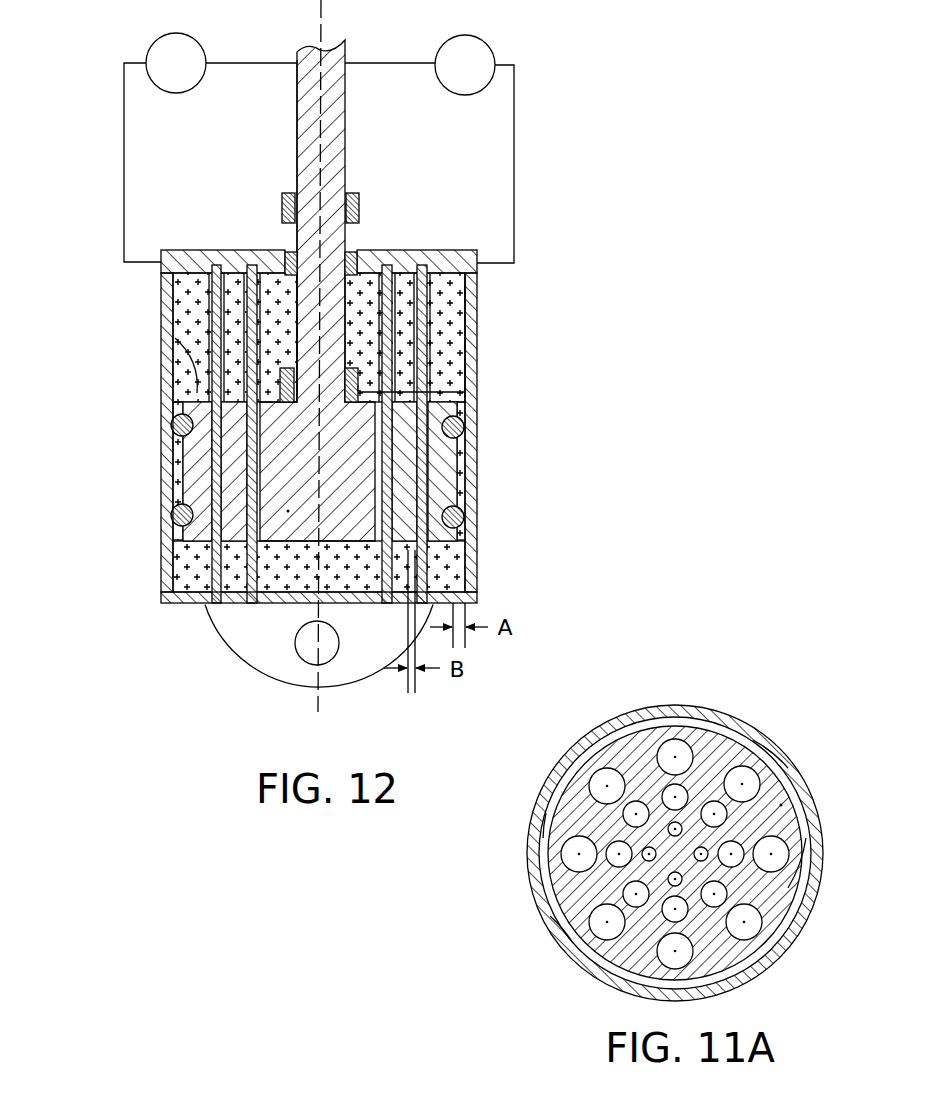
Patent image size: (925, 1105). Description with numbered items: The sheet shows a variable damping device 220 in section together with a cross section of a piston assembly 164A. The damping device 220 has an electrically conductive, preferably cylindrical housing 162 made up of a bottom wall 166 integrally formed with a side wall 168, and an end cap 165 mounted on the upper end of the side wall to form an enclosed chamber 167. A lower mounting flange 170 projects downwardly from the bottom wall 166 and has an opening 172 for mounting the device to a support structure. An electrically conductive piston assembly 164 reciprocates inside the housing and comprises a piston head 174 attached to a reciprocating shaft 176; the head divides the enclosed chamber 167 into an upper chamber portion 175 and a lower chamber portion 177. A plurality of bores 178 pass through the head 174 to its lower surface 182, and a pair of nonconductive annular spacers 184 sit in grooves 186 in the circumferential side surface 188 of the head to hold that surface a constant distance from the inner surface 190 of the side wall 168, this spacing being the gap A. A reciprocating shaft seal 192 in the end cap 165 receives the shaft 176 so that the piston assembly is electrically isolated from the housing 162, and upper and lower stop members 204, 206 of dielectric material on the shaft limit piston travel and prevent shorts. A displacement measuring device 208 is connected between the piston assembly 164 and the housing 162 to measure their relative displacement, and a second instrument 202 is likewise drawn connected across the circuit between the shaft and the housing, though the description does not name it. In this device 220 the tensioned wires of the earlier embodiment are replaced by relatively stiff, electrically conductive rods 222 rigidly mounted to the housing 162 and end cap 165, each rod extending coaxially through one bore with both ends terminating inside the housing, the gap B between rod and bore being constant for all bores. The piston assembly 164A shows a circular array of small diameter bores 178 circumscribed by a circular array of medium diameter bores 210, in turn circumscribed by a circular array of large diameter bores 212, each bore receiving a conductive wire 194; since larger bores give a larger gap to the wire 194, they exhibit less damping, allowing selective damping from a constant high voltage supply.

In FIG. 12, the housing 162 is at (482, 375).
In FIG. 11A, the housing 162 is at (541, 769).
In FIG. 12, the piston assembly 164 is at (348, 96).
In FIG. 11A, the piston assembly 164A is at (809, 840).
In FIG. 12, the end cap 165 is at (173, 263).
In FIG. 12, the bottom wall 166 is at (200, 604).
In FIG. 11A, the bottom wall 166 is at (597, 732).
In FIG. 12, the enclosed chamber 167 is at (218, 312).
In FIG. 12, the side wall 168 is at (168, 572).
In FIG. 12, the lower mounting flange 170 is at (283, 680).
In FIG. 12, the opening 172 is at (327, 643).
In FIG. 12, the piston head 174 is at (288, 512).
In FIG. 11A, the piston head 174 is at (781, 805).
In FIG. 12, the upper chamber portion 175 is at (453, 310).
In FIG. 12, the reciprocating shaft 176 is at (300, 128).
In FIG. 12, the lower chamber portion 177 is at (440, 575).
In FIG. 12, the bores 178 is at (250, 468).
In FIG. 11A, the bores 178 is at (712, 775).
In FIG. 12, the lower surface 182 is at (183, 542).
In FIG. 12, the annular spacers 184 is at (175, 418).
In FIG. 11A, the annular spacers 184 is at (754, 740).
In FIG. 12, the grooves 186 is at (190, 330).
In FIG. 12, the circumferential side surface 188 is at (468, 478).
In FIG. 11A, the circumferential side surface 188 is at (548, 869).
In FIG. 12, the inner surface 190 is at (458, 340).
In FIG. 12, the reciprocating shaft seal 192 is at (287, 253).
In FIG. 11A, the electrically conductive wire 194 is at (772, 854).
In FIG. 12, the voltmeter 202 is at (488, 46).
In FIG. 12, the upper stop member 204 is at (353, 193).
In FIG. 12, the lower stop member 206 is at (466, 392).
In FIG. 12, the displacement measuring device 208 is at (161, 37).
In FIG. 11A, the medium diameter bores 210 is at (656, 813).
In FIG. 11A, the large diameter bores 212 is at (593, 933).
In FIG. 12, the variable damping device 220 is at (575, 187).
In FIG. 12, the rods 222 is at (252, 305).